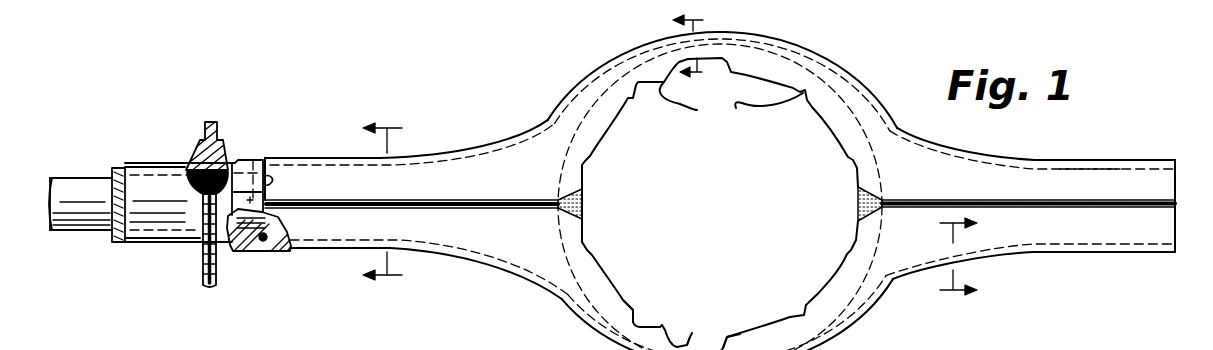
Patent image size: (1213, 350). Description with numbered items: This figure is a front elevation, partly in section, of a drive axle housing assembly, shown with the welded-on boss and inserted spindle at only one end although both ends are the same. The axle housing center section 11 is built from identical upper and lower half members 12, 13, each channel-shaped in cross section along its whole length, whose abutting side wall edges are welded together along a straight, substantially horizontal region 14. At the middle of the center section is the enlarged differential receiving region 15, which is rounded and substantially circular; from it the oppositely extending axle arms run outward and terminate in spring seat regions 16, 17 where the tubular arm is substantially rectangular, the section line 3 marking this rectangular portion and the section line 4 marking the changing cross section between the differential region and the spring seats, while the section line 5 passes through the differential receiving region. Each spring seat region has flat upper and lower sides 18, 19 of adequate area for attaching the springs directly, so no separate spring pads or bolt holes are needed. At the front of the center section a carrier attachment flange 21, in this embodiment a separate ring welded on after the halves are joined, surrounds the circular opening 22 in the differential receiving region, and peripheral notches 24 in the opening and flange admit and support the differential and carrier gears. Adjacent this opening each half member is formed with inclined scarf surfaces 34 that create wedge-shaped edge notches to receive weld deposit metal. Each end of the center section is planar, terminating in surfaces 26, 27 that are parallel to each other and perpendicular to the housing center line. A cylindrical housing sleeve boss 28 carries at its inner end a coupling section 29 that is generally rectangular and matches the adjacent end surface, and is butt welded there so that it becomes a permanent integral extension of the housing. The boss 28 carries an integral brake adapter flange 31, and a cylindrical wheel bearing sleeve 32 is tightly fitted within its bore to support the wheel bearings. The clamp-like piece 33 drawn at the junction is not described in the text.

The axle housing center section 11 is at (853, 84).
The upper half member 12 is at (995, 170).
The lower half member 13 is at (1017, 234).
The horizontal welded region 14 is at (1024, 206).
The differential receiving region 15 is at (797, 46).
The spring seat region 16 is at (1089, 167).
The spring seat region 17 is at (318, 158).
The flat upper side 18 is at (299, 159).
The flat lower side 19 is at (301, 250).
The carrier attachment flange 21 is at (757, 45).
The circular opening 22 is at (620, 290).
The peripheral notches 24 is at (690, 336).
The planar end surface 26 is at (272, 182).
The planar end surface 27 is at (1180, 234).
The housing sleeve boss 28 is at (157, 245).
The coupling section 29 is at (254, 160).
The brake adapter flange 31 is at (220, 139).
The wheel bearing sleeve 32 is at (94, 180).
The clamp 33 is at (269, 230).
The inclined scarf surfaces 34 is at (583, 198).
The section line 3- 3 is at (392, 203).
The section line 4- 4 is at (947, 258).
The section line 5- 5 is at (698, 46).